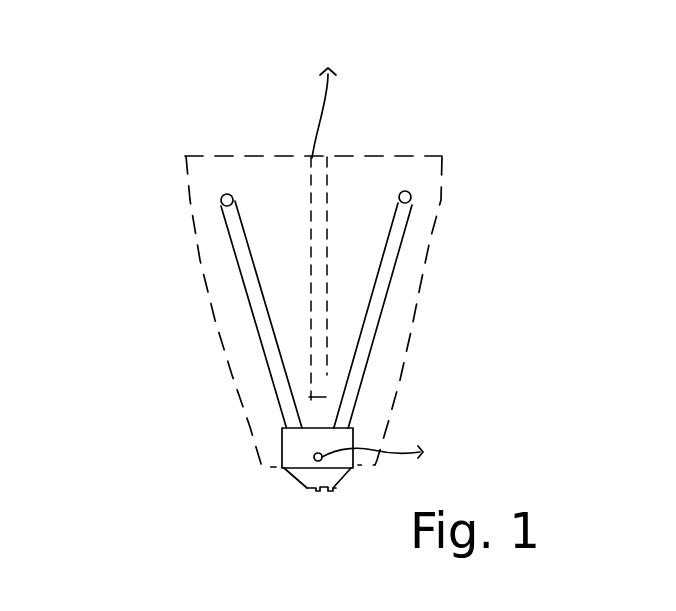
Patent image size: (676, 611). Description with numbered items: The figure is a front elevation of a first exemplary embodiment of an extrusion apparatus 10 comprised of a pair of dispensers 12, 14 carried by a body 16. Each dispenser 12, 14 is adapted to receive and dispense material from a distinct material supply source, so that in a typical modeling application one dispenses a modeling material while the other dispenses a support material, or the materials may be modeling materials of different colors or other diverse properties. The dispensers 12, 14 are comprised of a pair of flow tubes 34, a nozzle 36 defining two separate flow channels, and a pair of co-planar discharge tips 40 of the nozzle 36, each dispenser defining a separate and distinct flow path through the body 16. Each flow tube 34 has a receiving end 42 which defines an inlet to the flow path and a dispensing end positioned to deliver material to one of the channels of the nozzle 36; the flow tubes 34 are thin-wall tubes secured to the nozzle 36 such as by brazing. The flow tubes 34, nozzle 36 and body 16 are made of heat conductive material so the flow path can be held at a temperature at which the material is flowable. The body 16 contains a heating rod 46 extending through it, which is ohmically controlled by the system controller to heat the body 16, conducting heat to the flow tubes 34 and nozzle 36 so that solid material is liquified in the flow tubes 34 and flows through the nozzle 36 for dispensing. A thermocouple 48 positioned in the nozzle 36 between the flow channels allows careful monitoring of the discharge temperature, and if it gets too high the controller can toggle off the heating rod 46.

The extrusion apparatus 10 is at (480, 303).
The dispenser 12 is at (233, 257).
The dispenser 14 is at (396, 270).
The body 16 is at (352, 166).
The flow tubes 34 is at (388, 228).
The nozzle 36 is at (316, 452).
The discharge tips 40 is at (307, 490).
The receiving end 42 is at (232, 194).
The heating rod 46 is at (325, 167).
The thermocouple 48 is at (315, 456).